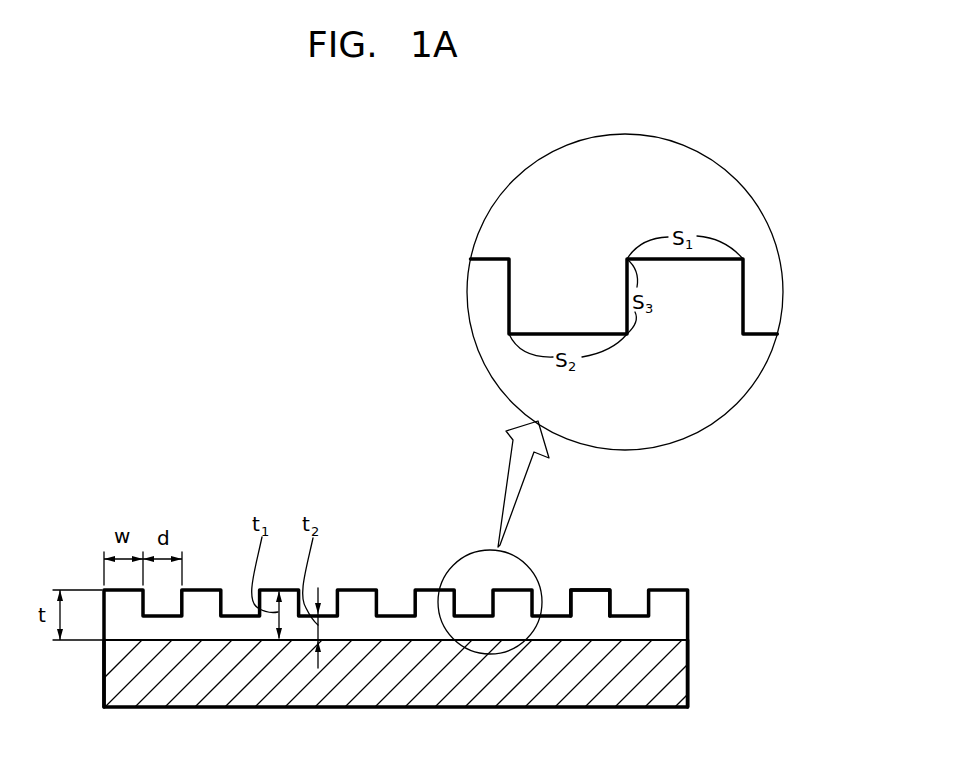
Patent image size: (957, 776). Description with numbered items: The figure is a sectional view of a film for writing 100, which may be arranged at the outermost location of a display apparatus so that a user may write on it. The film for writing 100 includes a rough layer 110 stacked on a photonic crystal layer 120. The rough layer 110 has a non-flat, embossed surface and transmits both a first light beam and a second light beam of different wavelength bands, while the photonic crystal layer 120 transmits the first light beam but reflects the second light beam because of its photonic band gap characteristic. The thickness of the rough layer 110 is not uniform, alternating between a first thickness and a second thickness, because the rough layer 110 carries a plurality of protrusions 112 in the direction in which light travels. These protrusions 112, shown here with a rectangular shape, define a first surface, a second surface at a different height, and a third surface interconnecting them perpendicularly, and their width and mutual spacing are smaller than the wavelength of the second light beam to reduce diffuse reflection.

The film for writing 100 is at (170, 435).
The rough layer 110 is at (675, 628).
The protrusions 112 is at (592, 592).
The photonic crystal layer 120 is at (675, 683).